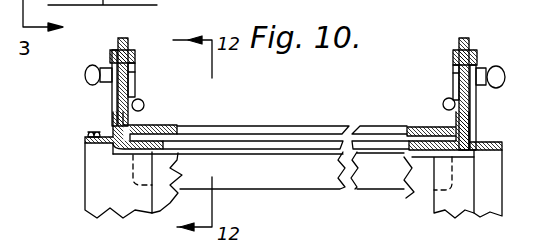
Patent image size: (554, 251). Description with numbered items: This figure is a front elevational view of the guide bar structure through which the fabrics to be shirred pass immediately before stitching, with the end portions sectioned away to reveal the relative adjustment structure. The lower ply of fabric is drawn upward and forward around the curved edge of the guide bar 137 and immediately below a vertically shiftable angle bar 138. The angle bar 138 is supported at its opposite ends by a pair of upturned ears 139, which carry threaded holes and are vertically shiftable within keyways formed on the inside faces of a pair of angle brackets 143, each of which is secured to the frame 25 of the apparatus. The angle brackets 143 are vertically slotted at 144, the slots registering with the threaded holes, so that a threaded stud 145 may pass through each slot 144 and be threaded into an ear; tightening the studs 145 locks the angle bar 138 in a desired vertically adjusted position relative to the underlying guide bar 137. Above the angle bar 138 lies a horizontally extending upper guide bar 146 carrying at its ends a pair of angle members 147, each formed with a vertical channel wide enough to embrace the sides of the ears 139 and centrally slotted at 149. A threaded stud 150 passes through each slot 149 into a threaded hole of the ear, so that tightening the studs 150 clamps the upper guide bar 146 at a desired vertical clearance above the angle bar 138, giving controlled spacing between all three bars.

The upturned ears 139 is at (124, 37).
The angle members 147 is at (135, 50).
The vertical slots 144 is at (113, 95).
The slot 149 is at (137, 72).
The threaded stud 145 is at (85, 76).
The threaded stud 150 is at (144, 102).
The angle brackets 143 is at (110, 117).
The upper guide bar 146 is at (318, 125).
The angle bar 138 is at (312, 177).
The frame 25 is at (496, 172).
The guide bar 137 is at (420, 198).